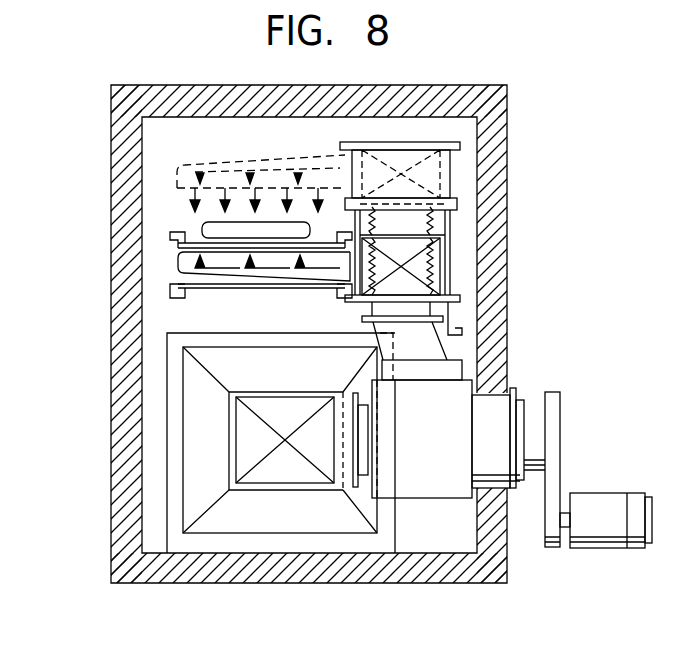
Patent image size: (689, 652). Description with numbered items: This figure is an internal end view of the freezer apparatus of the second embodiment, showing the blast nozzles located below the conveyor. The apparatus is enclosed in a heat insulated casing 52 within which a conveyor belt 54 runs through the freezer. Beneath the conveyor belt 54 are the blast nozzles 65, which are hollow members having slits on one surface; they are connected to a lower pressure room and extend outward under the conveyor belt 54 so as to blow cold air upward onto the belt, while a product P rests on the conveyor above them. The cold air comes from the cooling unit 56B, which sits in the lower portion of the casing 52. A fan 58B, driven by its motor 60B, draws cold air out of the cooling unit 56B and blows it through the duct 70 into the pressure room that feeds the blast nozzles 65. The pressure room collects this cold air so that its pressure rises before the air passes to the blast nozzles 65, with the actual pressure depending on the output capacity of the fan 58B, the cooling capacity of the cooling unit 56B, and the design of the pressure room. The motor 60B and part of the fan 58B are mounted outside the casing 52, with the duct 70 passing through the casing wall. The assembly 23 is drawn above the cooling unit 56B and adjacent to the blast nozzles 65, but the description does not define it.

The heat insulated casing 52 is at (112, 513).
The substrate P is at (240, 228).
The conveyor belt 54 is at (192, 233).
The blast nozzles 65 is at (177, 257).
The cathode assembly 23 is at (422, 269).
The duct 70 is at (444, 400).
The cooling unit 56B is at (200, 417).
The fan 58B is at (485, 488).
The motor 60B is at (615, 493).